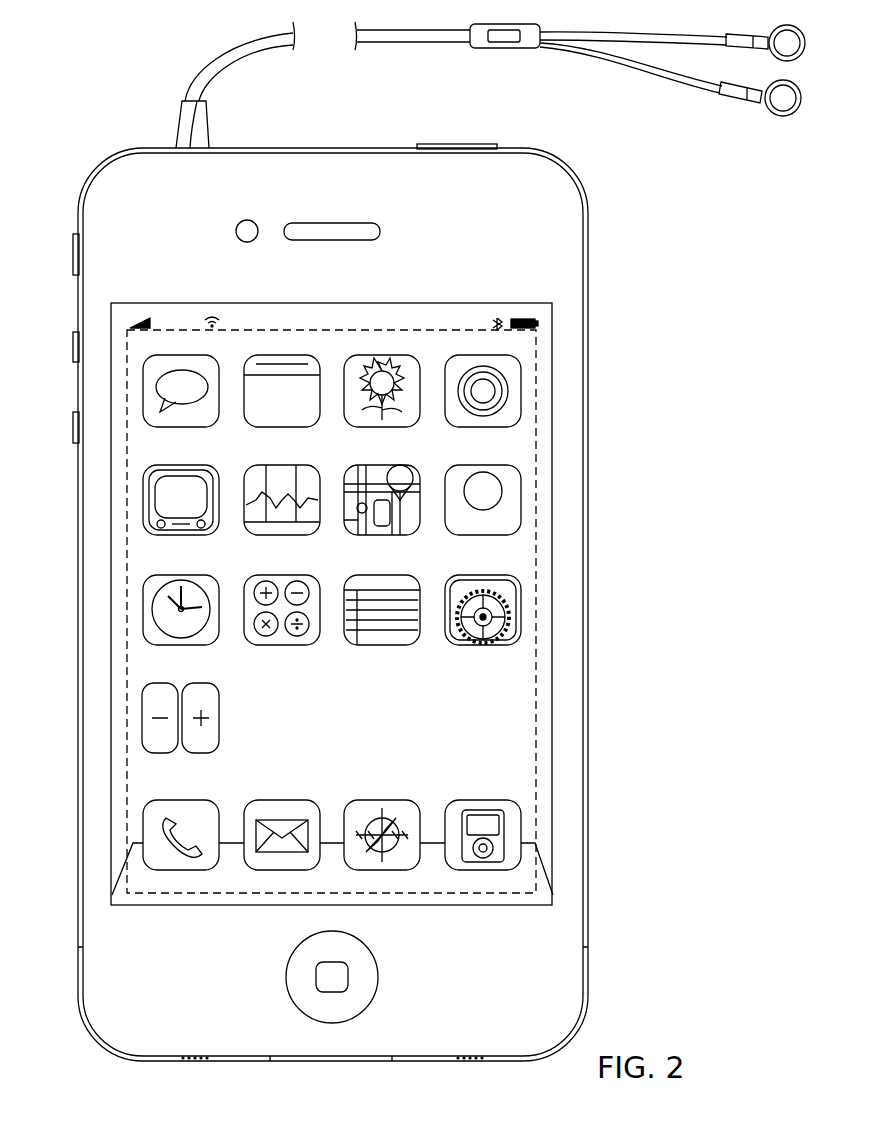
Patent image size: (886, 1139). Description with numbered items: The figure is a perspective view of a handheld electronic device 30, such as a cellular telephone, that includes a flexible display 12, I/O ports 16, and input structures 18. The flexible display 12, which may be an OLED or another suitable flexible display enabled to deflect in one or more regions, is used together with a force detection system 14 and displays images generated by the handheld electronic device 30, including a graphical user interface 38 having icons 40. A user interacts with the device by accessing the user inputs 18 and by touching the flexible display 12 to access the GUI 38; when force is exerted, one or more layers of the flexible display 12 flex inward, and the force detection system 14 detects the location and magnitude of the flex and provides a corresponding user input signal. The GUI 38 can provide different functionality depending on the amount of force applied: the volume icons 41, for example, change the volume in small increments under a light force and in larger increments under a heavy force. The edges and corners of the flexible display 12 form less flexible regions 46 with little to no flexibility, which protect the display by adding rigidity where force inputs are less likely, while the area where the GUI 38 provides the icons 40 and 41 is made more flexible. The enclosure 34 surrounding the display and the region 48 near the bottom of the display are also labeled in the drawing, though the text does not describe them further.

The flexible display 12 is at (391, 604).
The force detection system 14 is at (556, 570).
The input/output (I/O) ports 16 is at (203, 108).
The input structures 18 is at (73, 260).
The handheld electronic device 30 is at (158, 113).
The enclosure / housing 34 is at (588, 298).
The graphical user interface (GUI) 38 is at (536, 720).
The icons 40 is at (186, 355).
The volume icons 41 is at (161, 683).
The less flexible regions 46 is at (279, 553).
The dock region 48 is at (143, 787).